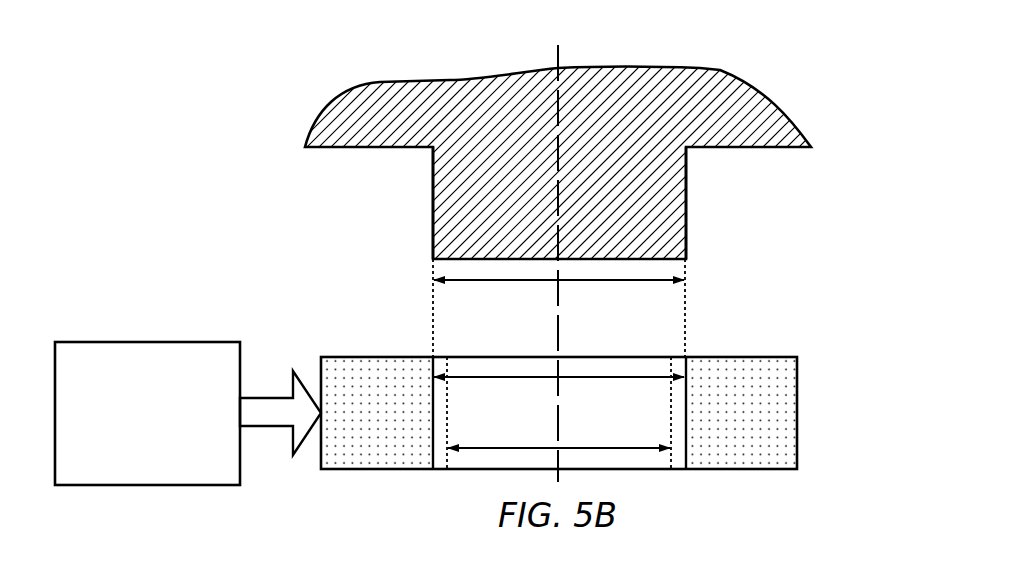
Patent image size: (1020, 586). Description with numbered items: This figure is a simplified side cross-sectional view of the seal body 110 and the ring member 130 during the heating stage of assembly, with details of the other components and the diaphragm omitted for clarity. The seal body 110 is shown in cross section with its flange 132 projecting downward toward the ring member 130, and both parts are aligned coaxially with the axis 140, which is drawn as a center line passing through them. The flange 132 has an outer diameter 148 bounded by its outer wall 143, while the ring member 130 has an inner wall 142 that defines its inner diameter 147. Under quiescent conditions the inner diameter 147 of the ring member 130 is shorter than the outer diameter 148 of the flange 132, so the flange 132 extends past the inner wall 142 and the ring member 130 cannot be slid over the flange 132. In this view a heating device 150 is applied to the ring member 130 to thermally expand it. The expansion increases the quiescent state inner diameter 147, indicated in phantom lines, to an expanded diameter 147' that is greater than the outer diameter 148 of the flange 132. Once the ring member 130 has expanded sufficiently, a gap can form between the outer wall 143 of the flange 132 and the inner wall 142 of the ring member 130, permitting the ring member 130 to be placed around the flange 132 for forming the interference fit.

The seal body 110 is at (737, 100).
The ring member 130 is at (775, 412).
The flange 132 is at (680, 222).
The axis 140 is at (563, 58).
The inner wall 142 is at (685, 412).
The outer wall 143 is at (432, 222).
The inner diameter 147 is at (559, 413).
The expanded diameter 147' is at (559, 349).
The outer diameter 148 is at (604, 281).
The heating device 150 is at (140, 342).